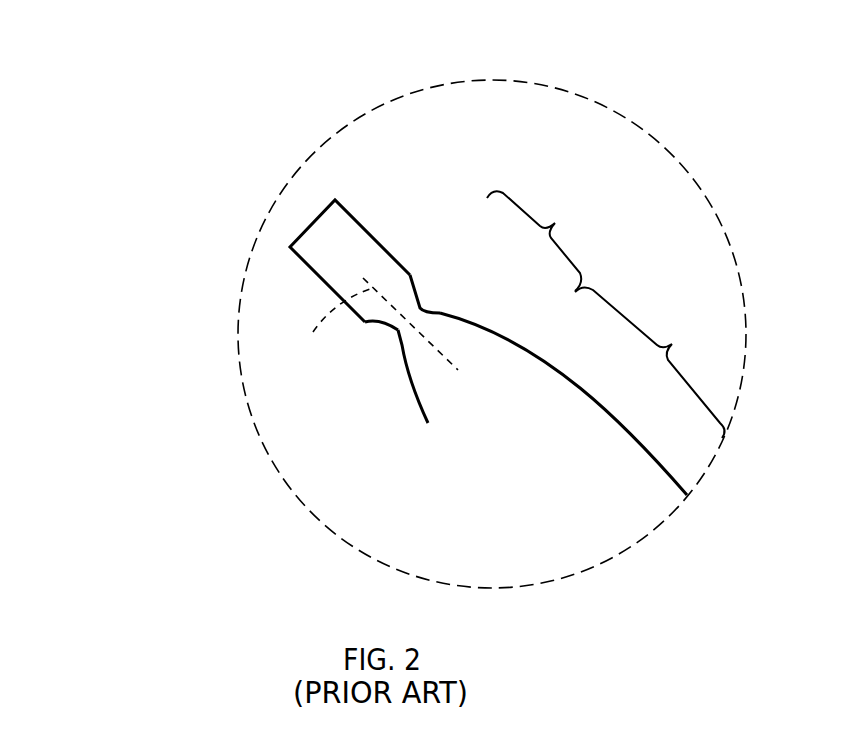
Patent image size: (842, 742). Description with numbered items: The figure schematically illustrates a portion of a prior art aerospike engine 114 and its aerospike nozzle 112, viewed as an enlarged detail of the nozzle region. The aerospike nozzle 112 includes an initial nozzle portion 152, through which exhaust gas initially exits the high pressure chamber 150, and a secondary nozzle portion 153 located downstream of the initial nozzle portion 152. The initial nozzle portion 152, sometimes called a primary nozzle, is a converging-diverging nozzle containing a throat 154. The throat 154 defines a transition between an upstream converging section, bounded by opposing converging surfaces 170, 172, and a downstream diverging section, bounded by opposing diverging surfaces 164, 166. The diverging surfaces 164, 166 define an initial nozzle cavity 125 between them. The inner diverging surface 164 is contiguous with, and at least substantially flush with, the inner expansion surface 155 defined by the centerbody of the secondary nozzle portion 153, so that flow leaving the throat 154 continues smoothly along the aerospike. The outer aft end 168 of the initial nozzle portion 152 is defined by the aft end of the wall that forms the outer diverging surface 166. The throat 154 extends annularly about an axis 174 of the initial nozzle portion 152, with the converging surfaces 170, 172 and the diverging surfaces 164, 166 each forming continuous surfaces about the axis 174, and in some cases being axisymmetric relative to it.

The aerospike nozzle 112 is at (196, 356).
The aerospike engine 114 is at (133, 248).
The initial nozzle cavity 125 is at (501, 403).
The high pressure chamber 150 is at (351, 260).
The initial nozzle portion 152 is at (538, 241).
The secondary nozzle portion 153 is at (650, 362).
The throat 154 is at (436, 304).
The inner expansion surface 155 is at (597, 398).
The inner diverging surface 164 is at (490, 335).
The outer diverging surface 166 is at (415, 388).
The outer aft end 168 is at (428, 424).
The converging surface 170 is at (413, 272).
The converging surface 172 is at (366, 328).
The axis 174 is at (324, 318).